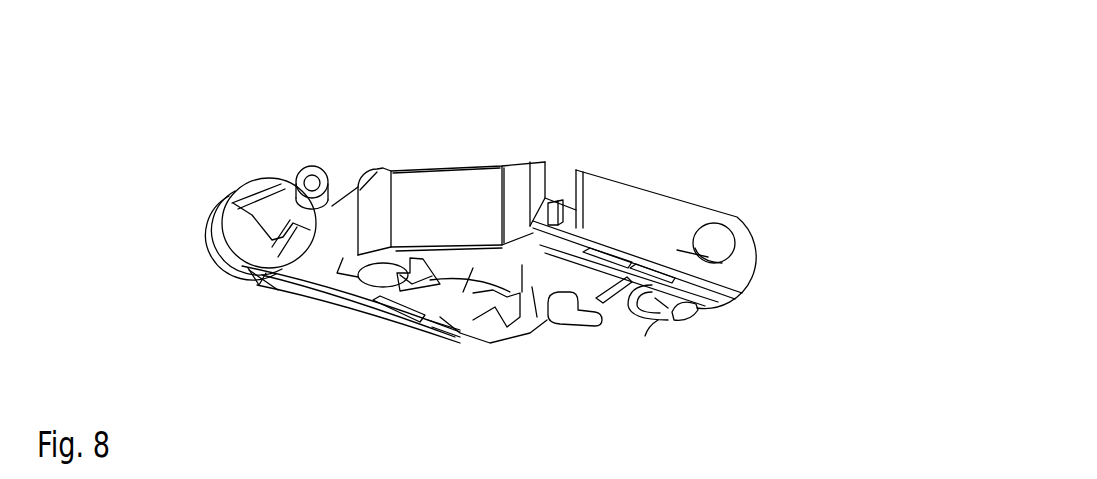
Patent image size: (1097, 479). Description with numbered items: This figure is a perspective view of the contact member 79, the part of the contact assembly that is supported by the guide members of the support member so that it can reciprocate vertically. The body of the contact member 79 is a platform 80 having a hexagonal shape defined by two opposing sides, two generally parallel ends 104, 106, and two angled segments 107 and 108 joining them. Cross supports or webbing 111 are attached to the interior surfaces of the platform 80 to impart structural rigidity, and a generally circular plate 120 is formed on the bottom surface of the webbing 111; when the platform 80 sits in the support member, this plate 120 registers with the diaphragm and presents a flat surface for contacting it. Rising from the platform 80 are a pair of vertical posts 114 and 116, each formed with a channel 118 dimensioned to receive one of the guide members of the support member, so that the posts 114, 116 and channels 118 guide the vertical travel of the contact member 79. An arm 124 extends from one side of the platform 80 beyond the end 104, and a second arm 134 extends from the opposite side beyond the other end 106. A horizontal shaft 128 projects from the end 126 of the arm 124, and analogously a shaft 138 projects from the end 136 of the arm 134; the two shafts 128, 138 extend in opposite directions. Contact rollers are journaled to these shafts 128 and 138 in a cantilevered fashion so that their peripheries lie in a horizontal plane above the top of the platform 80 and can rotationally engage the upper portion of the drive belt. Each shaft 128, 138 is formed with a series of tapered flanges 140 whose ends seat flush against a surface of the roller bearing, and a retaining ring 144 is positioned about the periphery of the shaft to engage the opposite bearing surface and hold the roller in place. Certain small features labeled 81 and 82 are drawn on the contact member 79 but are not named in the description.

The contact member 79 is at (703, 70).
The platform 80 is at (433, 298).
The stop 81 is at (566, 198).
The catch 82 is at (493, 318).
The end 104 is at (344, 258).
The end 106 is at (630, 320).
The angled segment 107 is at (442, 185).
The angled segment 108 is at (540, 328).
The webbing 111 is at (528, 233).
The vertical post 114 is at (377, 183).
The vertical post 116 is at (597, 303).
The channel 118 is at (568, 292).
The circular plate 120 is at (467, 343).
The arm 124 is at (278, 290).
The end 126 is at (212, 240).
The horizontal shaft 128 is at (282, 183).
The arm 134 is at (670, 268).
The end 136 is at (755, 250).
The shaft 138 is at (673, 312).
The tapered flanges 140 is at (222, 191).
The retaining ring 144 is at (307, 167).